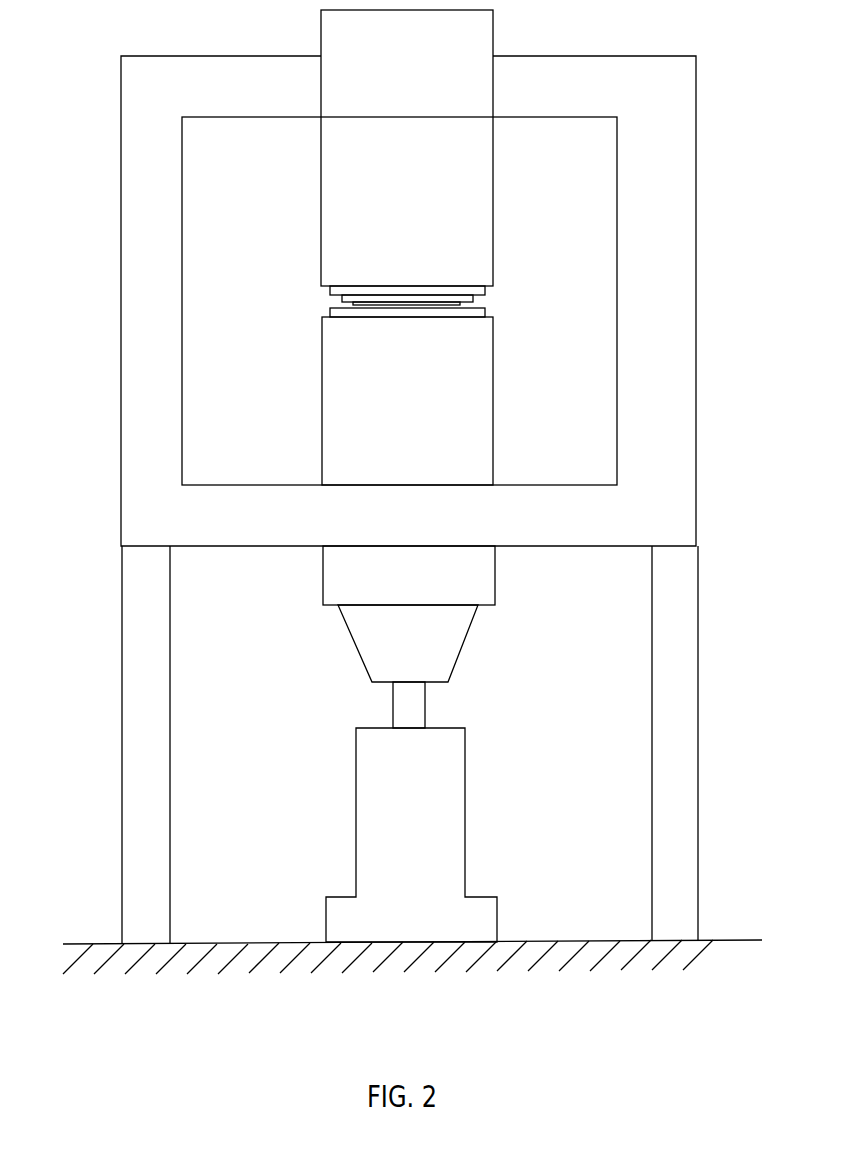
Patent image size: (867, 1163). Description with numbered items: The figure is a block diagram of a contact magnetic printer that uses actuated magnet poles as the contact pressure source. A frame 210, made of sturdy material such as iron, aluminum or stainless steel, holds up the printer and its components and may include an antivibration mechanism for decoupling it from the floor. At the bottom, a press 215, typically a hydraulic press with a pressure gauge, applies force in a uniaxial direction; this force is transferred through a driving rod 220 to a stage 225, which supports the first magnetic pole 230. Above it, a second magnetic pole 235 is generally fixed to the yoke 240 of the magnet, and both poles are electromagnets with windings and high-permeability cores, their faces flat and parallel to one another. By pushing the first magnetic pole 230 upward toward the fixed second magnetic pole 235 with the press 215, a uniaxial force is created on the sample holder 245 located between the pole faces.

The frame 210 is at (122, 730).
The press 215 is at (465, 784).
The driving rod 220 is at (425, 708).
The stage 225 is at (462, 645).
The first magnetic pole 230 is at (493, 401).
The second magnetic pole 235 is at (493, 29).
The yoke 240 is at (696, 232).
The sample holder 245 is at (470, 302).